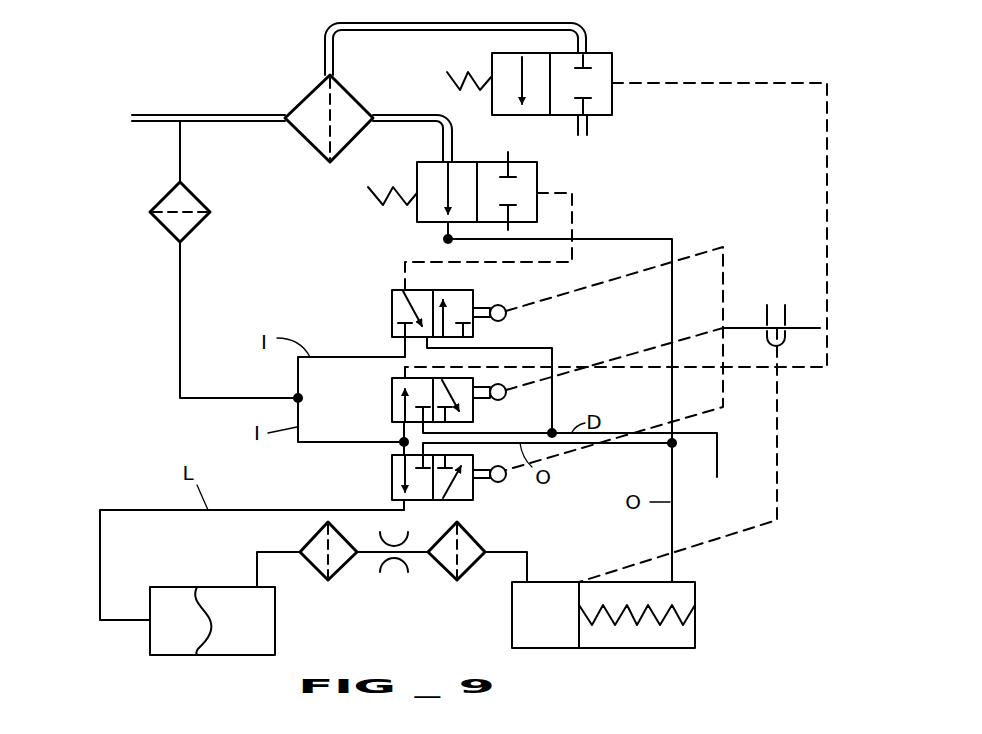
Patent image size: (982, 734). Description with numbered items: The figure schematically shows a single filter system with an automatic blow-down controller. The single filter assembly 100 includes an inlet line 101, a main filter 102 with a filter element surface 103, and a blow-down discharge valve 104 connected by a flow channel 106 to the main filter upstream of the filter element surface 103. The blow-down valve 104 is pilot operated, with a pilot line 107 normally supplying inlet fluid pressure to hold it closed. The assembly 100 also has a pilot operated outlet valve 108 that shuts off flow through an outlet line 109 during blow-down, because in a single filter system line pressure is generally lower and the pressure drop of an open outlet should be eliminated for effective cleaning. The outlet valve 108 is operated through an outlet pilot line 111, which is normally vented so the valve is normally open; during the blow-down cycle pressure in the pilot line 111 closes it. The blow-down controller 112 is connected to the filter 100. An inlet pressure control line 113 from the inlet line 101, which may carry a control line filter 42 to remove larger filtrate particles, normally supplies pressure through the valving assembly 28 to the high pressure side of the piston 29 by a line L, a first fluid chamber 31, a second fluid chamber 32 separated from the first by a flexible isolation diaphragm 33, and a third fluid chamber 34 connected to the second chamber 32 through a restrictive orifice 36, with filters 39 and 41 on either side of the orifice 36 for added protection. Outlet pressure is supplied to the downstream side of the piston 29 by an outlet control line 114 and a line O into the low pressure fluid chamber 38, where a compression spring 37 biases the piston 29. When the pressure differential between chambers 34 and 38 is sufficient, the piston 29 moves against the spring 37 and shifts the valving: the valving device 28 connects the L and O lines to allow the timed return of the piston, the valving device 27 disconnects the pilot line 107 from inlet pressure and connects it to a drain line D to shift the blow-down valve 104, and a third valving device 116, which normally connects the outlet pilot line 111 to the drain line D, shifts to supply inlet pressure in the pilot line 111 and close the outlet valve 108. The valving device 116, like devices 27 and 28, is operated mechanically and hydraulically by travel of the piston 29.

The single filter assembly 100 is at (682, 50).
The inlet line 101 is at (207, 113).
The main filter 102 is at (356, 100).
The filter element surface 103 is at (330, 95).
The blow-down discharge valve 104 is at (600, 53).
The flow channel 106 is at (445, 30).
The pilot line 107 is at (793, 82).
The pilot operated outlet valve 108 is at (537, 175).
The outlet line 109 is at (440, 229).
The outlet pilot line 111 is at (573, 218).
The blow-down controller 112 is at (800, 452).
The inlet pressure control line 113 is at (180, 289).
The outlet control line 114 is at (660, 237).
The third valving device 116 is at (392, 312).
The valving device 27 is at (392, 403).
The valving device 28 is at (392, 475).
The piston 29 is at (580, 633).
The first fluid chamber 31 is at (173, 598).
The second fluid chamber 32 is at (240, 602).
The flexible isolation diaphragm 33 is at (193, 593).
The third fluid chamber 34 is at (547, 598).
The restrictive orifice 36 is at (408, 558).
The compression spring 37 is at (658, 622).
The low pressure fluid chamber 38 is at (688, 592).
The filter 39 is at (317, 573).
The filter 41 is at (473, 537).
The control line filter 42 is at (200, 200).